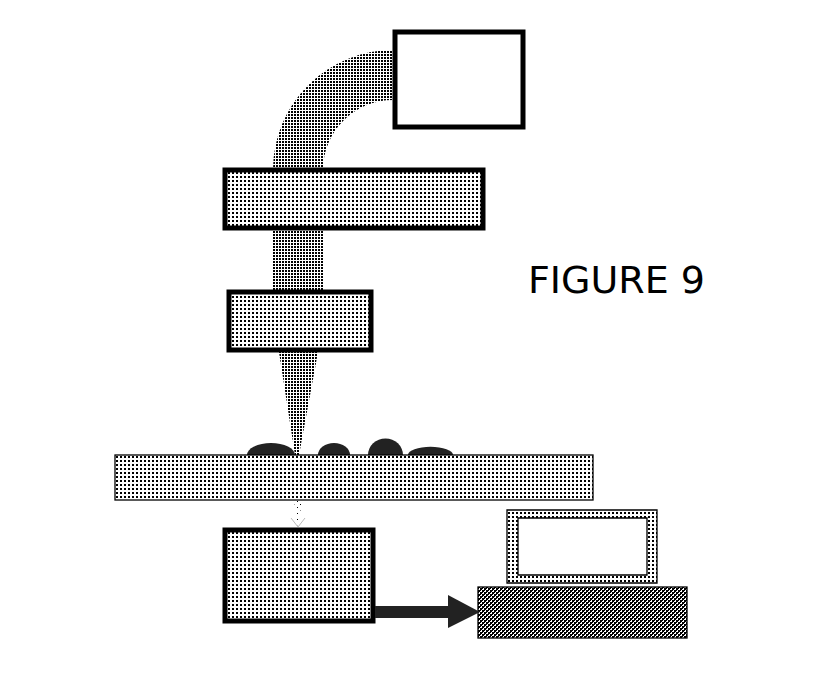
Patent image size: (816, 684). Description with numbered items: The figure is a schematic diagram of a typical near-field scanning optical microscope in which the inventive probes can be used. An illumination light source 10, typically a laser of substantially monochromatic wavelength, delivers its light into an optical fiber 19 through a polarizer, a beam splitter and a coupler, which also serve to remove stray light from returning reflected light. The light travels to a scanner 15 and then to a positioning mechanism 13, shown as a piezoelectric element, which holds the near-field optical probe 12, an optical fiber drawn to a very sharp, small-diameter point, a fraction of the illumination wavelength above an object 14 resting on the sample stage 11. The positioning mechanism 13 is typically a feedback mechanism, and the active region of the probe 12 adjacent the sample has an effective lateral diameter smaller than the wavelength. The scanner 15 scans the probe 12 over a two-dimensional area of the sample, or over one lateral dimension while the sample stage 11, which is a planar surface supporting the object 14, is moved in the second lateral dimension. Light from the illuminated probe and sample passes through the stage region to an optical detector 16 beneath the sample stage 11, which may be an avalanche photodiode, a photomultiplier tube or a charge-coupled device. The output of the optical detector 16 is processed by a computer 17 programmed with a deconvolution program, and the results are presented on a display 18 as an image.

The illumination light source 10 is at (525, 50).
The sample stage 11 is at (253, 481).
The near-field optical probe 12 is at (290, 388).
The positioning mechanism 13 is at (227, 292).
The object 14 is at (350, 435).
The scanner 15 is at (485, 197).
The optical detector 16 is at (223, 573).
The computer 17 is at (480, 587).
The display 18 is at (613, 510).
The optical fiber 19 is at (330, 78).